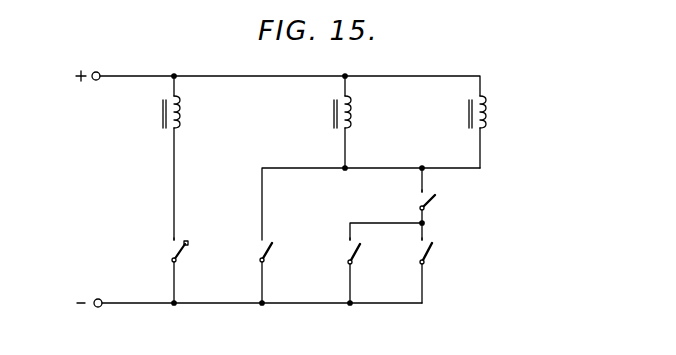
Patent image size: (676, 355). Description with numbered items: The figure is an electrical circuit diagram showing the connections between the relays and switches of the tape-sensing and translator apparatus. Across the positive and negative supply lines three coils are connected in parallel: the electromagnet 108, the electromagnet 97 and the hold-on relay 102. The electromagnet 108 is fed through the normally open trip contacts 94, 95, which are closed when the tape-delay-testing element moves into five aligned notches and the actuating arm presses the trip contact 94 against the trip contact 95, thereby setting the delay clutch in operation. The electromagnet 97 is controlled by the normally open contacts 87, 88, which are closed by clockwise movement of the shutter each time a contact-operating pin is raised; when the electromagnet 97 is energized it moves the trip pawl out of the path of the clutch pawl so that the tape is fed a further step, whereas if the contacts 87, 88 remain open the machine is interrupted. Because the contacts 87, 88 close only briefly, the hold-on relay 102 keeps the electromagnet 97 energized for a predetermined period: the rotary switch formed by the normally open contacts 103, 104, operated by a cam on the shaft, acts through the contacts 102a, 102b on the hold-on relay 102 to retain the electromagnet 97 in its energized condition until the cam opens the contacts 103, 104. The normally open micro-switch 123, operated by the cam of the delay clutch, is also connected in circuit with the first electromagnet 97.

The electromagnet 108 is at (179, 110).
The electromagnet 97 is at (350, 110).
The hold-on relay 102 is at (485, 110).
The trip contact 95 is at (174, 240).
The trip contact 94 is at (188, 247).
The micro-switch 123 is at (263, 240).
The contact 103 is at (425, 192).
The contact 104 is at (437, 197).
The contact 88 is at (427, 242).
The contact 87 is at (436, 248).
The contact 102a is at (347, 240).
The contact 102b is at (362, 248).